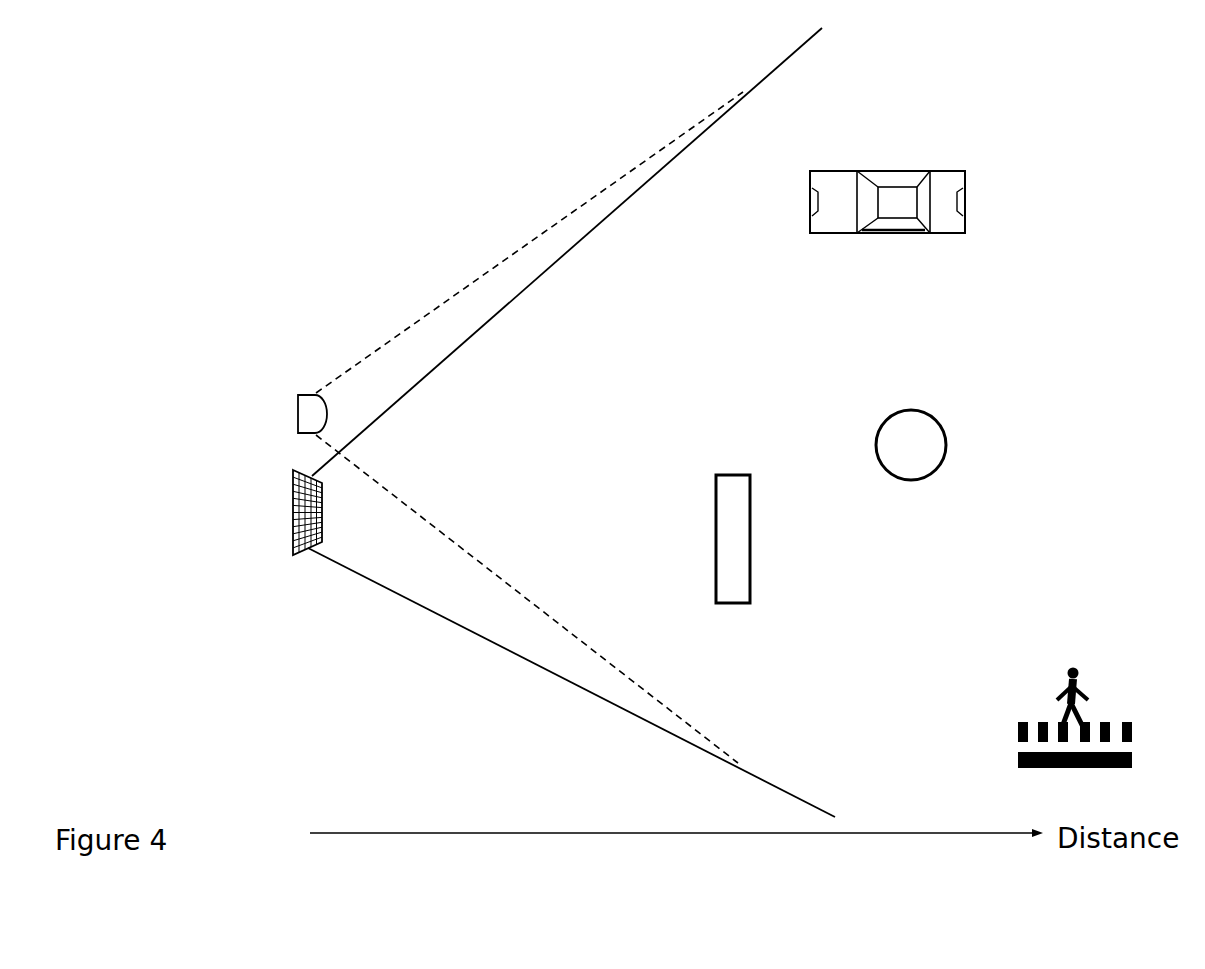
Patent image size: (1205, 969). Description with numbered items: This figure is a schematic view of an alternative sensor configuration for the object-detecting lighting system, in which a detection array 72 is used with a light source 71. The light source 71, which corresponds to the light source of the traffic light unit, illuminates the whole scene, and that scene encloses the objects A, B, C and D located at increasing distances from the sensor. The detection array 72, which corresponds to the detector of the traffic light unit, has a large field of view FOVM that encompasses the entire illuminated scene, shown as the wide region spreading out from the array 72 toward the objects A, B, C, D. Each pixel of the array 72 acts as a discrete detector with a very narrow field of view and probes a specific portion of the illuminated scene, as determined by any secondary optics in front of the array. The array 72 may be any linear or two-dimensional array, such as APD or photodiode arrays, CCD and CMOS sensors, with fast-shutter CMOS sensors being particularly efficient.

The light source 71 is at (298, 412).
The detection array 72 is at (293, 514).
The field of view FOVM is at (500, 645).
The object A is at (1090, 690).
The object B is at (750, 540).
The object C is at (946, 446).
The object D is at (967, 203).